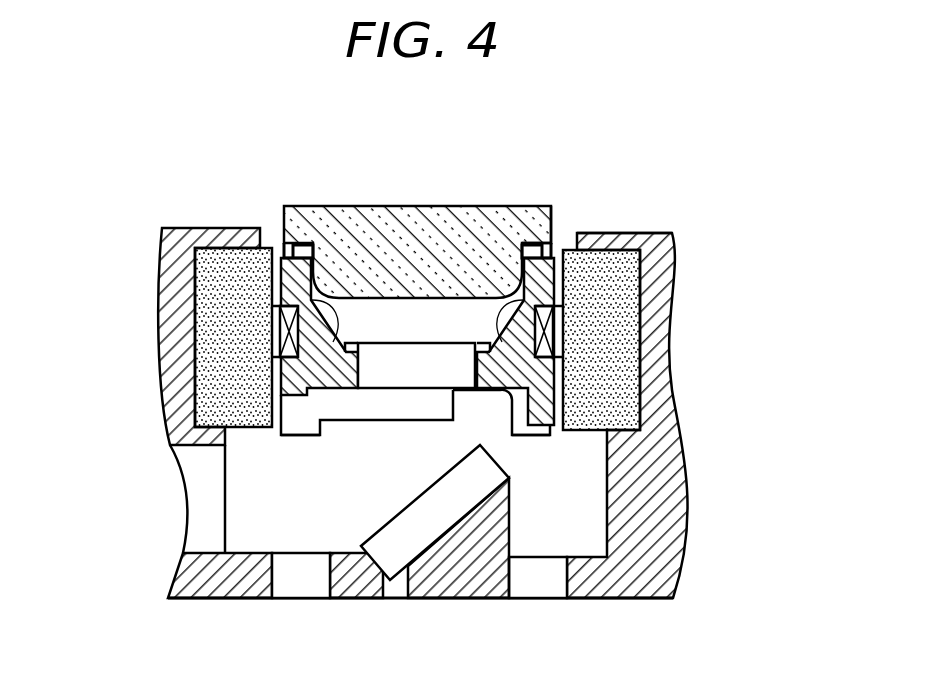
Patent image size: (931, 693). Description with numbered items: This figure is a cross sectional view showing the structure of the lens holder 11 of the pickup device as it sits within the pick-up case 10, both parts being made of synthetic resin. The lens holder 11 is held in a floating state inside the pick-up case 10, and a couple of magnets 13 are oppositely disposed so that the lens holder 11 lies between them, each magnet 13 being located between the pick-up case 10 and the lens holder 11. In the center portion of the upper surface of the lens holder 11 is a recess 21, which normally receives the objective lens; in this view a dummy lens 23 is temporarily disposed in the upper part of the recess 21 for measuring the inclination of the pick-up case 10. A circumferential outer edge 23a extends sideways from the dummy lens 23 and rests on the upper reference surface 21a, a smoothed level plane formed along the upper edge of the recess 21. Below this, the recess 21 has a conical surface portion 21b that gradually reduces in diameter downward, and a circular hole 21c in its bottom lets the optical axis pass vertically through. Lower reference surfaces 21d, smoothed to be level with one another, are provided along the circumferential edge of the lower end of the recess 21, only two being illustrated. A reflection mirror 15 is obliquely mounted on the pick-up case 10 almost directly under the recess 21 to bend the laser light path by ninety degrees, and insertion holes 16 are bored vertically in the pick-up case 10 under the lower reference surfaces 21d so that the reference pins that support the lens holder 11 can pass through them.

The pick-up case 10 is at (181, 228).
The lens holder 11 is at (289, 262).
The magnets 13 is at (633, 370).
The reflection mirror 15 is at (437, 520).
The insertion holes 16 is at (300, 583).
The recess 21 is at (411, 341).
The upper reference surface 21a is at (303, 243).
The conical surface portion 21b is at (298, 304).
The hole 21c is at (397, 373).
The lower reference surfaces 21d is at (302, 437).
The dummy lens 23 is at (461, 219).
The circumferential outer edge 23a is at (552, 222).